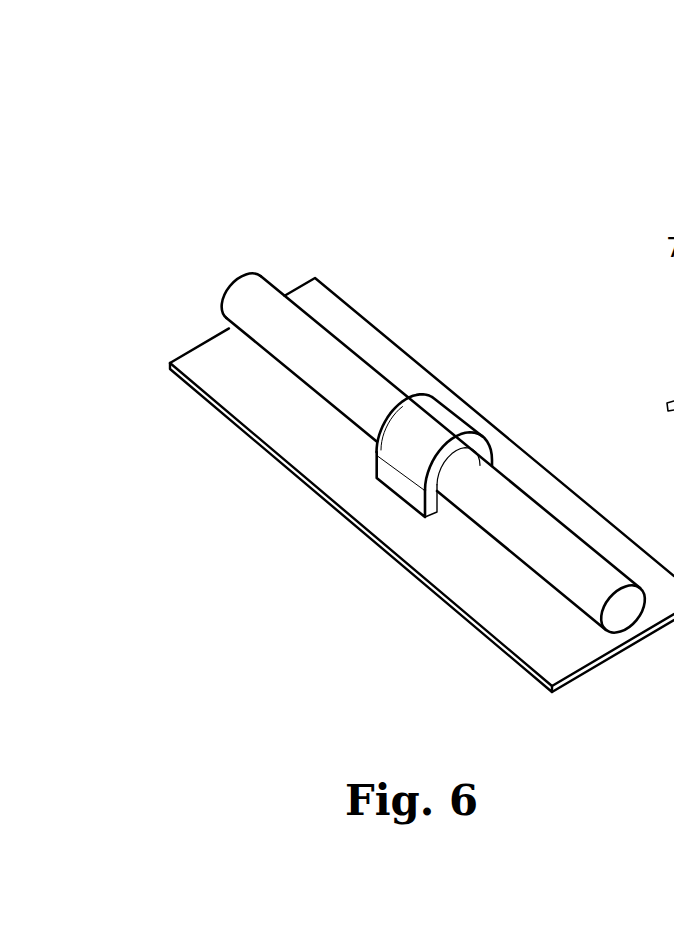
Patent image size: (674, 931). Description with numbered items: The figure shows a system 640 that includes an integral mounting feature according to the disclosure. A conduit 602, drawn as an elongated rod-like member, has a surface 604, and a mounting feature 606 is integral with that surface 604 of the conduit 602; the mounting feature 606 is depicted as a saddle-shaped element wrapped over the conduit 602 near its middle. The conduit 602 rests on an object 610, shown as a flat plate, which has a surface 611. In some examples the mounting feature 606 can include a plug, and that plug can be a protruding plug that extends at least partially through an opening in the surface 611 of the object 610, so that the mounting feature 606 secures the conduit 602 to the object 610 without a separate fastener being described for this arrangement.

The system 640 is at (344, 114).
The conduit 602 is at (317, 306).
The surface of the conduit 604 is at (363, 356).
The mounting feature 606 is at (464, 408).
The object 610 is at (450, 618).
The surface of the object 611 is at (538, 639).